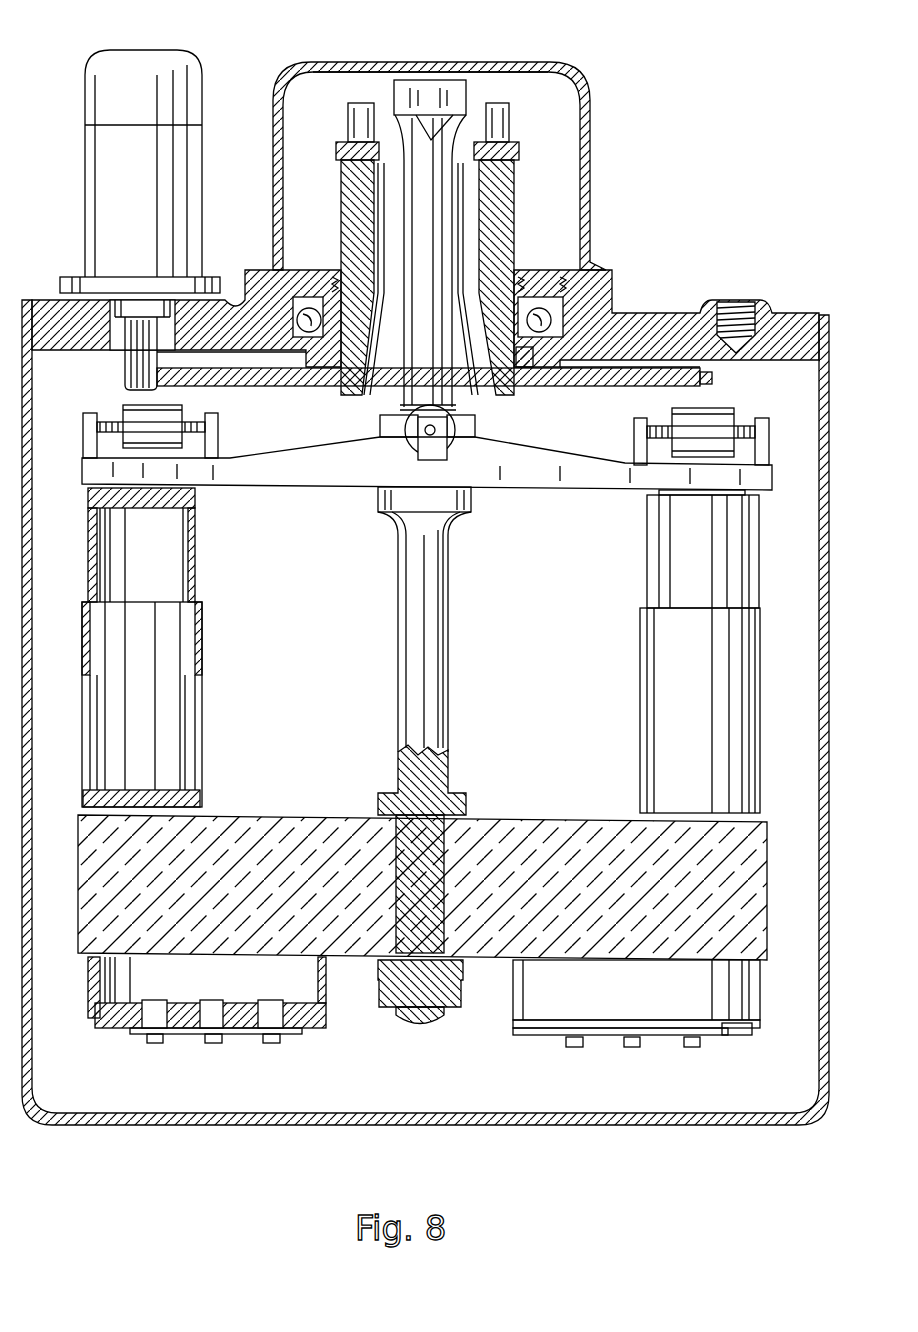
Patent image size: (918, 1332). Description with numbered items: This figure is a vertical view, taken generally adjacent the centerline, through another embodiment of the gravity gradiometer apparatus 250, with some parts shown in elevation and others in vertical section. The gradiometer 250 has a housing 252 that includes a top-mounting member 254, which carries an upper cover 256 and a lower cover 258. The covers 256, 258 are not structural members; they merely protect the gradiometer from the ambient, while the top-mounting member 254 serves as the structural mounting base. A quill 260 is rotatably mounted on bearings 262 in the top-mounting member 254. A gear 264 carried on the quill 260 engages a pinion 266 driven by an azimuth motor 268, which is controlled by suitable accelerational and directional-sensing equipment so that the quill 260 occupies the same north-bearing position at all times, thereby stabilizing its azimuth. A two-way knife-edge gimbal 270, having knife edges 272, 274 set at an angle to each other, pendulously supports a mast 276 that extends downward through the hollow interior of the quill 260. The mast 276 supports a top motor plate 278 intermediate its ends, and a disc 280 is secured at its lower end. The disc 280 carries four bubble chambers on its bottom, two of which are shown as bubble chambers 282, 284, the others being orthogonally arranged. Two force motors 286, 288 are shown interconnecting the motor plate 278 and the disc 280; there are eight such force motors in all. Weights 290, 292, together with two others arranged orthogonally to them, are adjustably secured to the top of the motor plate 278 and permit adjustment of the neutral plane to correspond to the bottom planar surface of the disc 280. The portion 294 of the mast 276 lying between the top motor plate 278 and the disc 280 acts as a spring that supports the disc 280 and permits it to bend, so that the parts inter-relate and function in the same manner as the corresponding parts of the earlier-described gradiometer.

The gravity gradiometer apparatus 250 is at (425, 652).
The housing 252 is at (630, 309).
The top-mounting member 254 is at (768, 312).
The cover 256 is at (316, 60).
The cover 258 is at (224, 1119).
The quill 260 is at (502, 211).
The bearings 262 is at (536, 300).
The gear 264 is at (712, 378).
The pinion 266 is at (125, 372).
The azimuth motor 268 is at (190, 166).
The two-way knife-edge gimbal 270 is at (449, 48).
The knife edge 272 is at (506, 137).
The knife edge 274 is at (431, 134).
The mast 276 is at (428, 377).
The top motor plate 278 is at (566, 475).
The disc 280 is at (523, 833).
The bubble chamber 282 is at (296, 1027).
The bubble chamber 284 is at (557, 1025).
The force motor 286 is at (82, 700).
The force motor 288 is at (672, 663).
The weight 290 is at (170, 412).
The weight 292 is at (714, 424).
The mast portion 294 is at (416, 571).